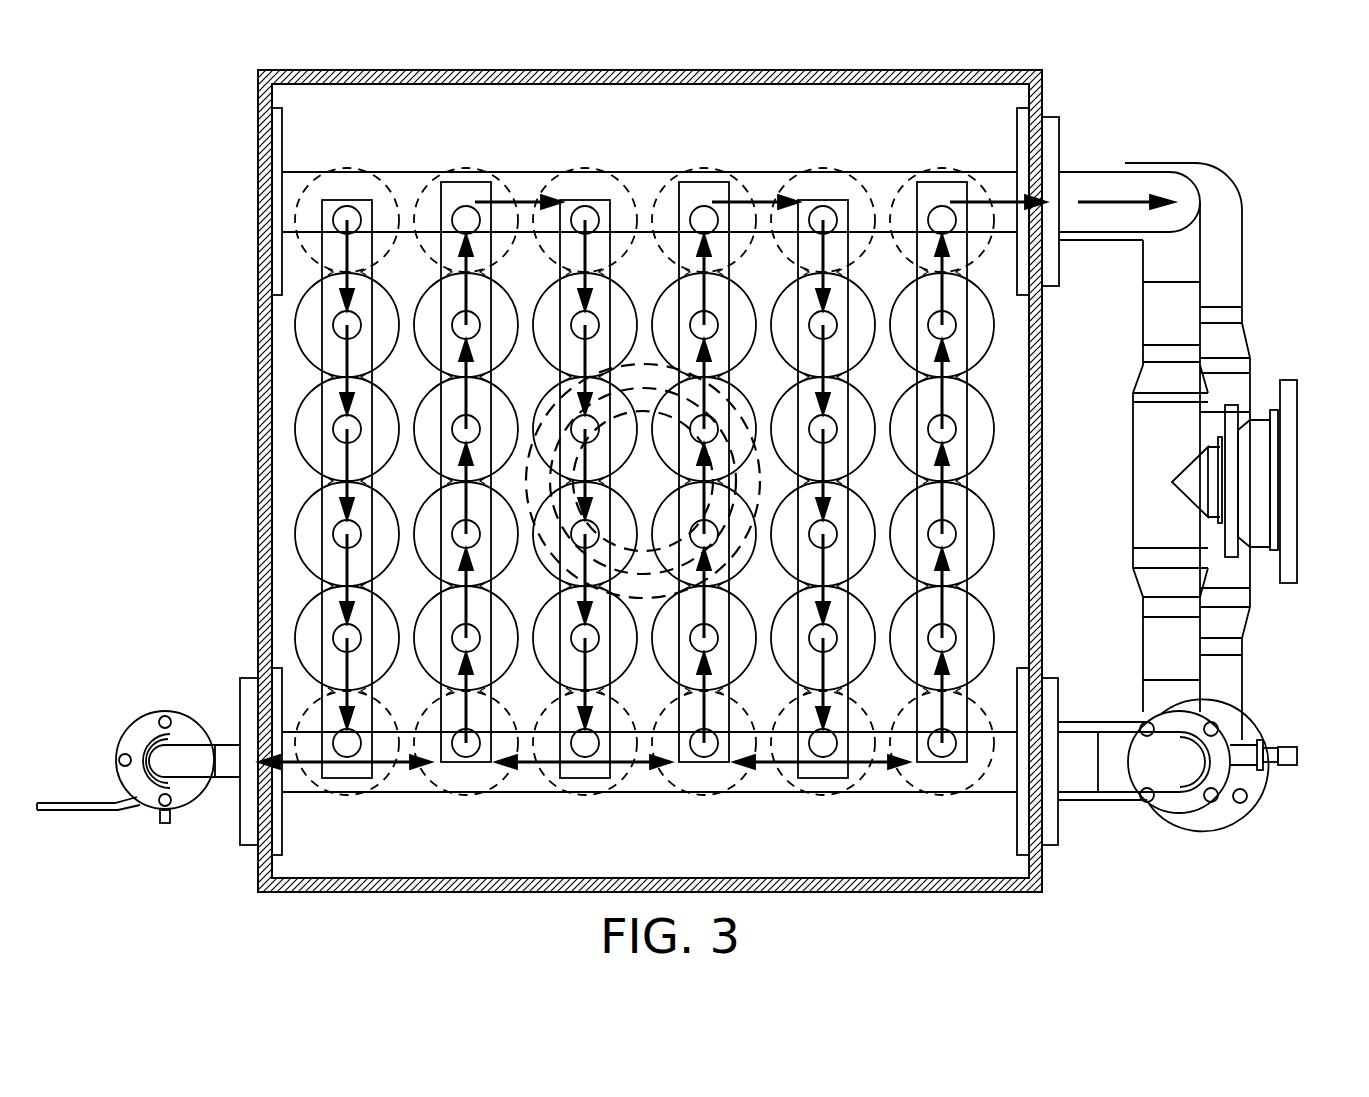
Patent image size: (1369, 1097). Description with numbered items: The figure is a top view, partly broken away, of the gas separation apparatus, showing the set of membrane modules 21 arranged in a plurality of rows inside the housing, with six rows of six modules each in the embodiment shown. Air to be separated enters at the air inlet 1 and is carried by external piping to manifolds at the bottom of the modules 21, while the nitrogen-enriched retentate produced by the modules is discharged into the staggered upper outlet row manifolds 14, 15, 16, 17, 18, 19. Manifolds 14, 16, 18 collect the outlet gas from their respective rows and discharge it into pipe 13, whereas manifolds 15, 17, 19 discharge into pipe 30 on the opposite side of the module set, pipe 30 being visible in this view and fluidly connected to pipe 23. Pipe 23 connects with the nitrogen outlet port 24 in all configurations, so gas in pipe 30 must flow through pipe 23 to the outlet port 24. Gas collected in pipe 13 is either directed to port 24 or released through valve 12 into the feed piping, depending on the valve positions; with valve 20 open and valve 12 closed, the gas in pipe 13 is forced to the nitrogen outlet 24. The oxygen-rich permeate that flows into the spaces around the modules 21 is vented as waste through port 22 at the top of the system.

The air inlet 1 is at (1297, 478).
The valve 12 is at (140, 807).
The pipe 13 is at (530, 782).
The manifold 14 is at (348, 767).
The manifold 15 is at (466, 767).
The manifold 16 is at (585, 767).
The manifold 17 is at (704, 767).
The manifold 18 is at (823, 767).
The manifold 19 is at (942, 767).
The valve 20 is at (1230, 773).
The module 21 is at (430, 340).
The port 22 is at (712, 470).
The pipe 23 is at (1090, 183).
The nitrogen outlet port 24 is at (1237, 460).
The pipe 30 is at (640, 183).